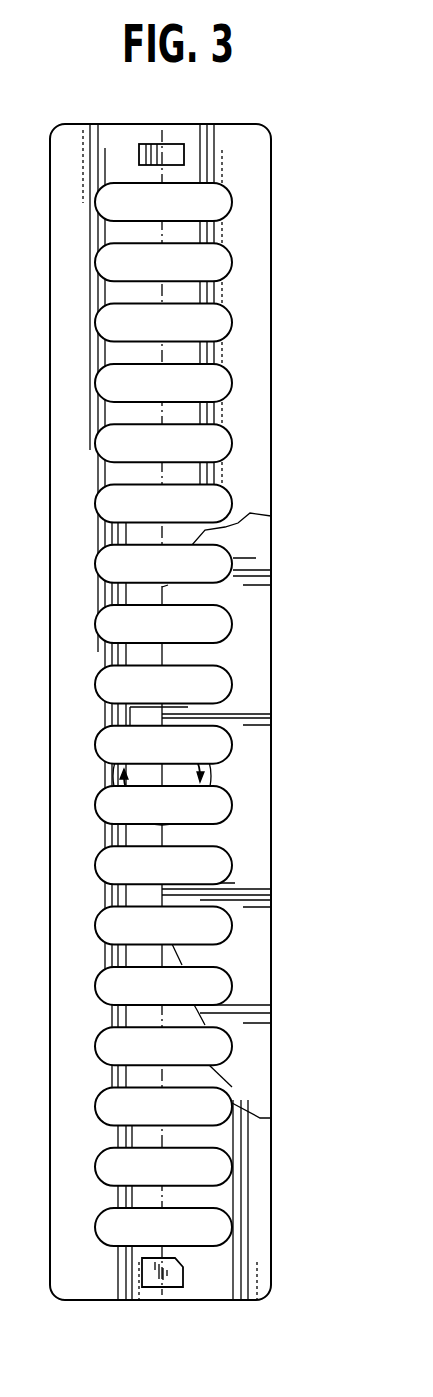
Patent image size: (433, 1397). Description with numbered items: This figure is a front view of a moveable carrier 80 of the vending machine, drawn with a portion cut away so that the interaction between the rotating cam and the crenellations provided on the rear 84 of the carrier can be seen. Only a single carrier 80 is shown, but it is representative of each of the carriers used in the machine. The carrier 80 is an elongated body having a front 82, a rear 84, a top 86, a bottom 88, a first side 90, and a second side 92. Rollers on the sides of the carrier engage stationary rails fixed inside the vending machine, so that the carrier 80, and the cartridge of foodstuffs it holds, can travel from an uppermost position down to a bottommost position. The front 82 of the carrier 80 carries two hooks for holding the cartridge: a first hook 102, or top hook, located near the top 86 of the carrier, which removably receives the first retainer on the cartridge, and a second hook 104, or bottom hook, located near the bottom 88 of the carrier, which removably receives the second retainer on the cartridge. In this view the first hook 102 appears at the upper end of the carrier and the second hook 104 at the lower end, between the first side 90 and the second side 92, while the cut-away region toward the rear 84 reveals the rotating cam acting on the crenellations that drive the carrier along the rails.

The moveable carrier 80 is at (296, 113).
The front 82 is at (252, 231).
The rear 84 is at (257, 655).
The top 86 is at (228, 124).
The bottom 88 is at (222, 1300).
The first side 90 is at (50, 835).
The second side 92 is at (271, 313).
The first hook 102 is at (172, 155).
The second hook 104 is at (150, 1283).